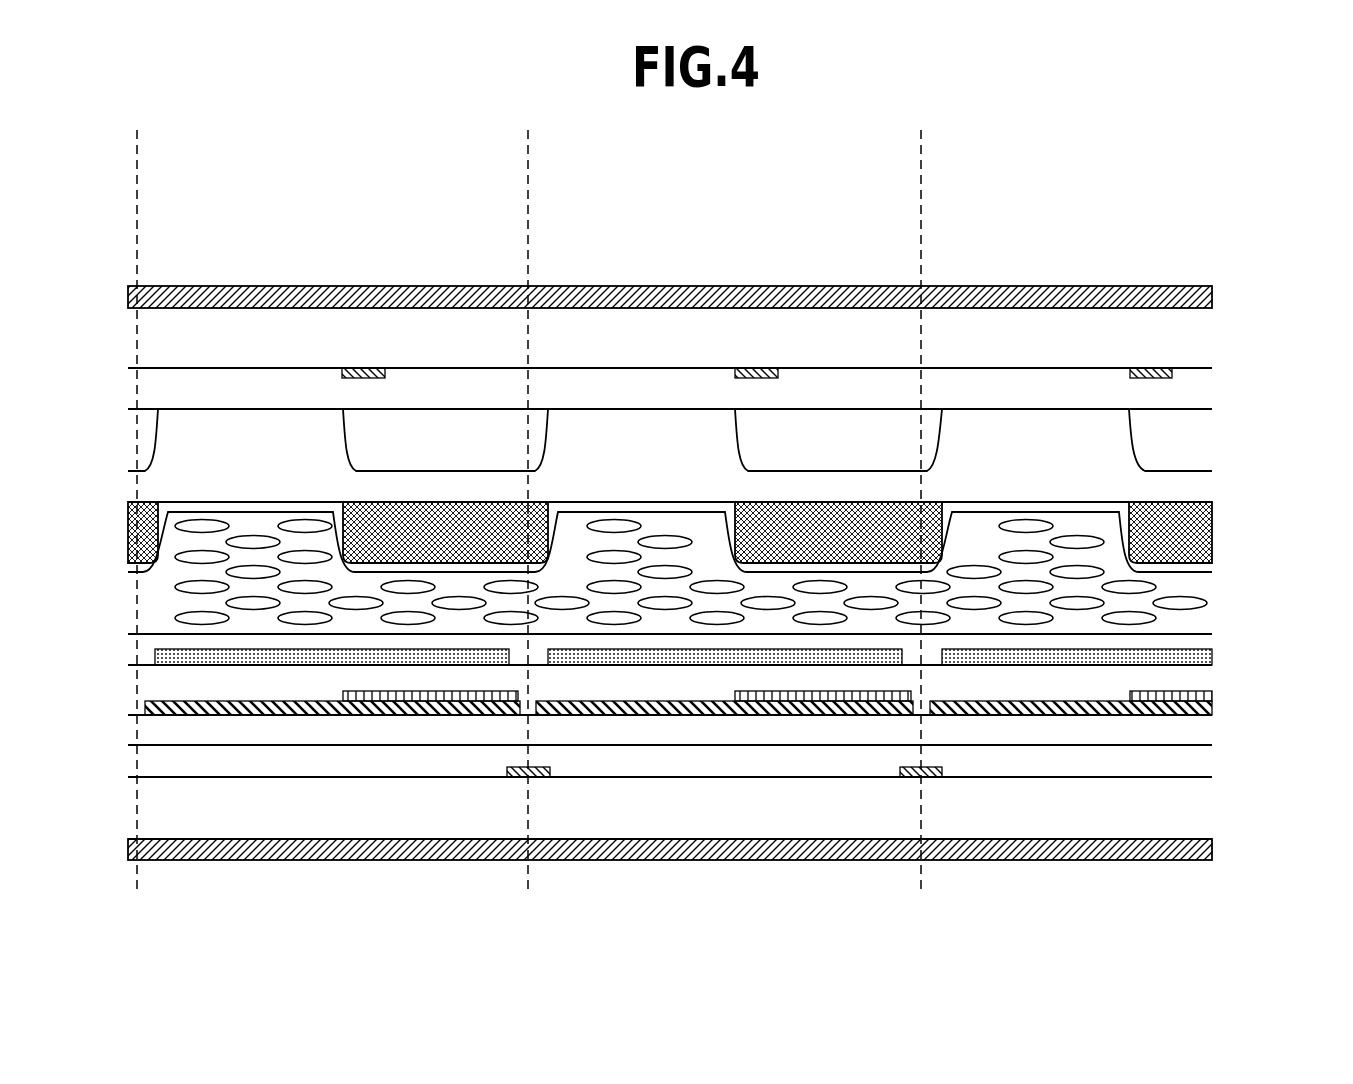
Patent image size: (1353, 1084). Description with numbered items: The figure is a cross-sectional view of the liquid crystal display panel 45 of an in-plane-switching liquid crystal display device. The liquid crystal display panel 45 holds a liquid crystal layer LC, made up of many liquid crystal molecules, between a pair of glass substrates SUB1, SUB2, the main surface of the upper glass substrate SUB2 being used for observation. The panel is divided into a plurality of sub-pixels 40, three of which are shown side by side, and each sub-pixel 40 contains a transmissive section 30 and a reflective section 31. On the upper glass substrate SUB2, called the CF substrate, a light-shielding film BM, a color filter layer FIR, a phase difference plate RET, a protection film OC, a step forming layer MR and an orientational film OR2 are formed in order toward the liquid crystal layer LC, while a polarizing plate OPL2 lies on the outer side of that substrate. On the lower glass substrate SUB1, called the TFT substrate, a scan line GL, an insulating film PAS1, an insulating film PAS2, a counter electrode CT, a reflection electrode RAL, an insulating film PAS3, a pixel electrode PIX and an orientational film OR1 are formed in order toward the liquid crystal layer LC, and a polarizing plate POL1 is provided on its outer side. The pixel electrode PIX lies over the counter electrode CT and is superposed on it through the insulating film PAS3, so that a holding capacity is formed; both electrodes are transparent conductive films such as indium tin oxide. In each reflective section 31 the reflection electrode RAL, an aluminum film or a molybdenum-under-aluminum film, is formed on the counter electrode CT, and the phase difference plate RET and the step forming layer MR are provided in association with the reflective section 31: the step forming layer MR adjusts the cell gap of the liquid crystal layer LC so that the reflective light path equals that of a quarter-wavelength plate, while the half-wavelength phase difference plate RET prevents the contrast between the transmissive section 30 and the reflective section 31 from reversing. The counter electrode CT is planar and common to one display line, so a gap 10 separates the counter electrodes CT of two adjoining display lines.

The liquid crystal display panel 45 is at (103, 271).
The sub-pixel 40 is at (1258, 143).
The transmissive section 30 is at (1132, 194).
The reflective section 31 is at (1258, 194).
The gap 10 is at (546, 734).
The upper polarizer OPL2 is at (1163, 286).
The glass substrate SUB2 is at (1182, 330).
The light-shielding film BM is at (340, 375).
The color filter layer FIR is at (1192, 388).
The phase difference plate RET is at (1195, 440).
The protection film OC is at (1188, 487).
The step forming layer MR is at (1212, 530).
The orientational film OR2 is at (1202, 568).
The liquid crystal layer LC is at (1195, 585).
The orientational film OR1 is at (1202, 642).
The insulating film PAS3 is at (1198, 678).
The counter electrode CT is at (317, 710).
The insulating film PAS2 is at (1195, 732).
The insulating film PAS1 is at (1195, 763).
The glass substrate SUB1 is at (1192, 808).
The polarizing plate POL1 is at (1210, 852).
The reflection electrode RAL is at (407, 695).
The scan line GL is at (509, 777).
The pixel electrode PIX is at (793, 660).